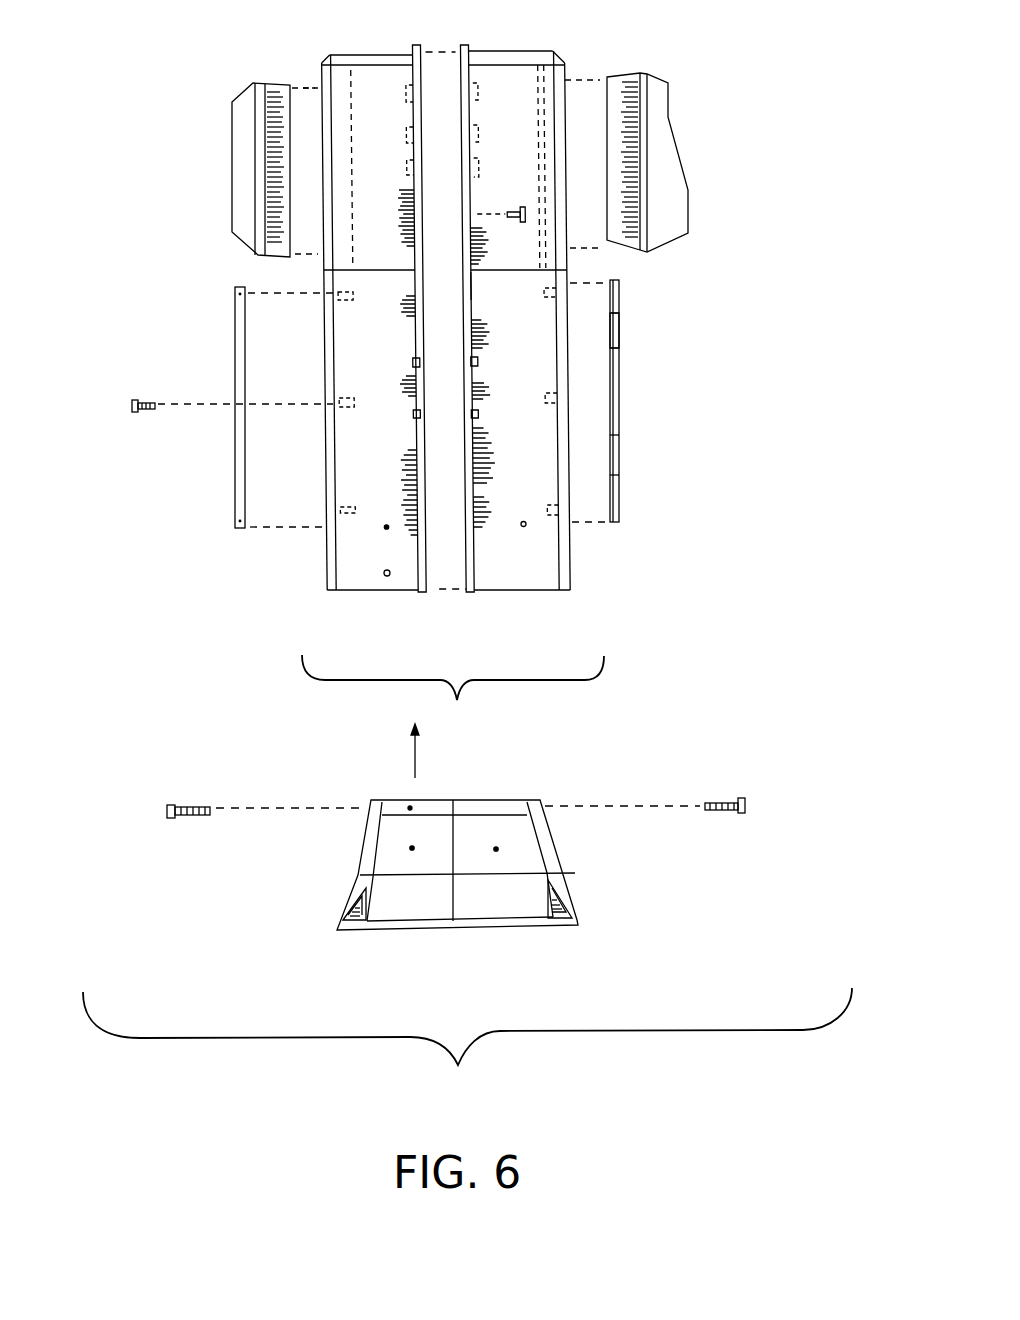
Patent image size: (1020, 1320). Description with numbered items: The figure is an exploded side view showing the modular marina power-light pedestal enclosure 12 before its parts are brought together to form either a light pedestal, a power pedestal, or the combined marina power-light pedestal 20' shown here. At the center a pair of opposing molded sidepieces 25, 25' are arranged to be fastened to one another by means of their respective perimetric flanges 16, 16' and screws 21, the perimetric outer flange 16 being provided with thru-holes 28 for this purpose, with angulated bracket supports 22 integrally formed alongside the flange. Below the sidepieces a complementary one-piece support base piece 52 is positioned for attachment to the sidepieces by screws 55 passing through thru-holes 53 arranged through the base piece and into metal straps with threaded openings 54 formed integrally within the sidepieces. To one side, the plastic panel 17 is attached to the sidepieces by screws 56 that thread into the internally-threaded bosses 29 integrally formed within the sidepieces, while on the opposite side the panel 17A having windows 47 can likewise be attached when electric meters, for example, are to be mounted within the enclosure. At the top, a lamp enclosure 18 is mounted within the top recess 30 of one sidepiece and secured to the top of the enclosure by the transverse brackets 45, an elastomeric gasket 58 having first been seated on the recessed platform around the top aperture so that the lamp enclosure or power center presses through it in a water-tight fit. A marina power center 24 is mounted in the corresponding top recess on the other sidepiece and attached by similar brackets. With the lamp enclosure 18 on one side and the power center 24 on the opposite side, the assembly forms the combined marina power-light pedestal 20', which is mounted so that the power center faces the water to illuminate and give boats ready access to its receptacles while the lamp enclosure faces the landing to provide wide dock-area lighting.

The enclosure 12 is at (473, 748).
The perimetric outer flange 16 is at (389, 318).
The perimetric flange 16' is at (511, 318).
The plastic panel 17 is at (237, 505).
The panel 17A is at (620, 495).
The lamp enclosure 18 is at (232, 110).
The combined marina power-light pedestal 20' is at (467, 1054).
The screws 21 is at (512, 208).
The angulated bracket supports 22 is at (408, 415).
The marina power center 24 is at (677, 138).
The sidepiece 25 is at (371, 359).
The sidepiece 25' is at (519, 354).
The thru-holes 28 is at (473, 285).
The internally-threaded bosses 29 is at (348, 513).
The top opening 30 is at (318, 73).
The transverse brackets 45 is at (407, 100).
The windows 47 is at (620, 335).
The support base piece 52 is at (362, 850).
The thru-holes 53 is at (492, 808).
The threaded openings 54 is at (517, 572).
The screws 55 is at (717, 802).
The screws 56 is at (132, 402).
The elastomeric gasket 58 is at (353, 245).